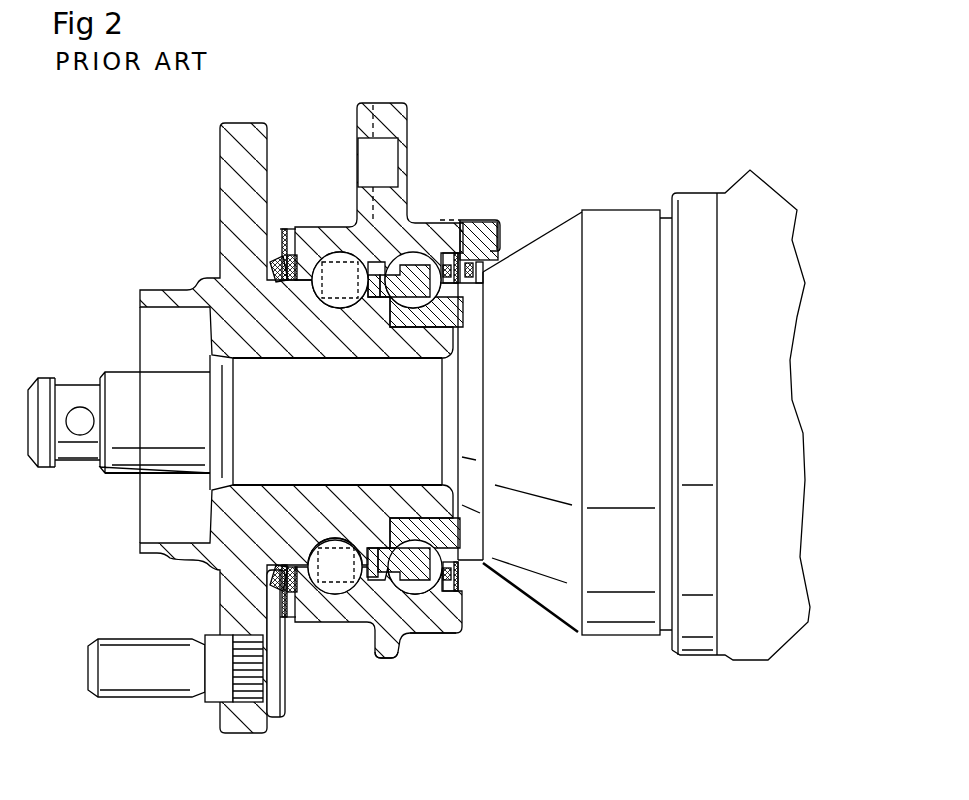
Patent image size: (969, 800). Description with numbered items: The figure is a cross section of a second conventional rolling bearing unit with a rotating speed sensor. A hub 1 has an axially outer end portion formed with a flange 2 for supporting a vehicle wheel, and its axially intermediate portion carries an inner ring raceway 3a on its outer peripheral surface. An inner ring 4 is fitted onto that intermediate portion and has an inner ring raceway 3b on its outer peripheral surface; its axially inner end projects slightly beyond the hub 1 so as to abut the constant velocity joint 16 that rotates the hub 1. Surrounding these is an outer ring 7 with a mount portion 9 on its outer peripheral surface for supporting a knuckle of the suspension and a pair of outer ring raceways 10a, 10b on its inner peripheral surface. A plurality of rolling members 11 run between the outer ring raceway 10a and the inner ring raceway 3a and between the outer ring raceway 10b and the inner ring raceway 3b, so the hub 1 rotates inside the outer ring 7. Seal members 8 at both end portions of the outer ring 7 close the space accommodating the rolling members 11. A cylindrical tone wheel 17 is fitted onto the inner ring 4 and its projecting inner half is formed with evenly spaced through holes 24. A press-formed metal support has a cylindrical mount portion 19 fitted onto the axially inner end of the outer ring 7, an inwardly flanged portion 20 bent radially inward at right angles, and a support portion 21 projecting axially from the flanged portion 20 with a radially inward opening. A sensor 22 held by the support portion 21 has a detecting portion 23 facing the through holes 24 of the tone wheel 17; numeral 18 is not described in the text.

The hub 1 is at (167, 293).
The flange 2 is at (247, 731).
The inner ring raceway 3a is at (325, 600).
The inner ring raceway 3b is at (443, 240).
The inner ring 4 is at (440, 633).
The outer ring 7 is at (380, 650).
The seal member 8 is at (302, 232).
The mount portion 9 is at (400, 117).
The outer ring raceway 10a is at (350, 254).
The outer ring raceway 10b is at (409, 592).
The rolling member 11 is at (337, 252).
The constant velocity joint 16 is at (698, 645).
The tone wheel 17 is at (490, 558).
The sensor 18 is at (490, 233).
The mount portion 19 is at (470, 565).
The inwardly flanged portion 20 is at (477, 585).
The support portion 21 is at (483, 273).
The sensor 22 is at (503, 240).
The detecting portion 23 is at (483, 276).
The through hole 24 is at (468, 285).